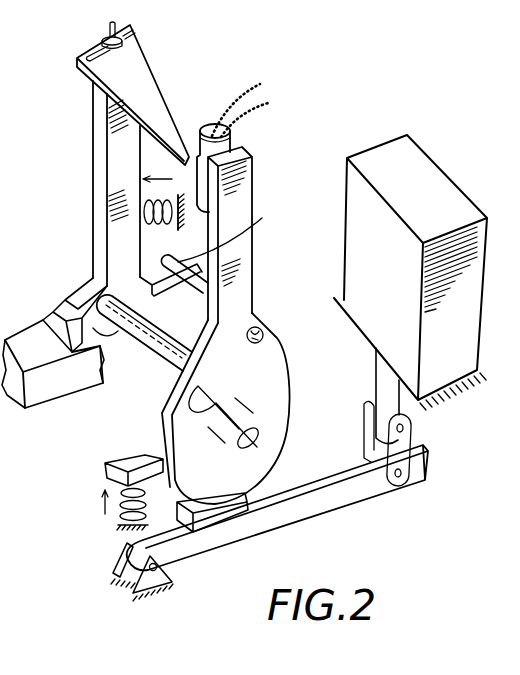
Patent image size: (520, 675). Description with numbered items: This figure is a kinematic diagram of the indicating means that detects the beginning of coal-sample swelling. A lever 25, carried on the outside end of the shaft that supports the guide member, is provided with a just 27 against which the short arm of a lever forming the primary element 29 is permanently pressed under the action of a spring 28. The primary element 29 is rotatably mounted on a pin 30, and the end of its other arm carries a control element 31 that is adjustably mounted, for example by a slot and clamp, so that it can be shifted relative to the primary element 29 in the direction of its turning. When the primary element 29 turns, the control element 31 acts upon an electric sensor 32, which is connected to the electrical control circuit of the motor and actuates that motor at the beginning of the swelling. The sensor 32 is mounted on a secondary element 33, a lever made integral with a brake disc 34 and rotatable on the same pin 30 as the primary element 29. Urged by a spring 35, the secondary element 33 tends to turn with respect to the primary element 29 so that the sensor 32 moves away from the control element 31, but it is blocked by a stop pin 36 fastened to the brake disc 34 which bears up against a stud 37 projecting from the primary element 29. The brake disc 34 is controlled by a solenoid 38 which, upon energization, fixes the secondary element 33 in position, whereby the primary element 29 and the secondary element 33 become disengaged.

The lever 25 is at (53, 385).
The just 27 is at (53, 315).
The spring 28 is at (163, 216).
The primary element 29 is at (91, 181).
The pin 30 is at (163, 360).
The control element 31 is at (148, 68).
The electric sensor 32 is at (214, 123).
The secondary element 33 is at (260, 259).
The brake disc 34 is at (278, 390).
The spring 35 is at (120, 505).
The stop pin 36 is at (193, 286).
The stud 37 is at (258, 223).
The solenoid 38 is at (431, 176).